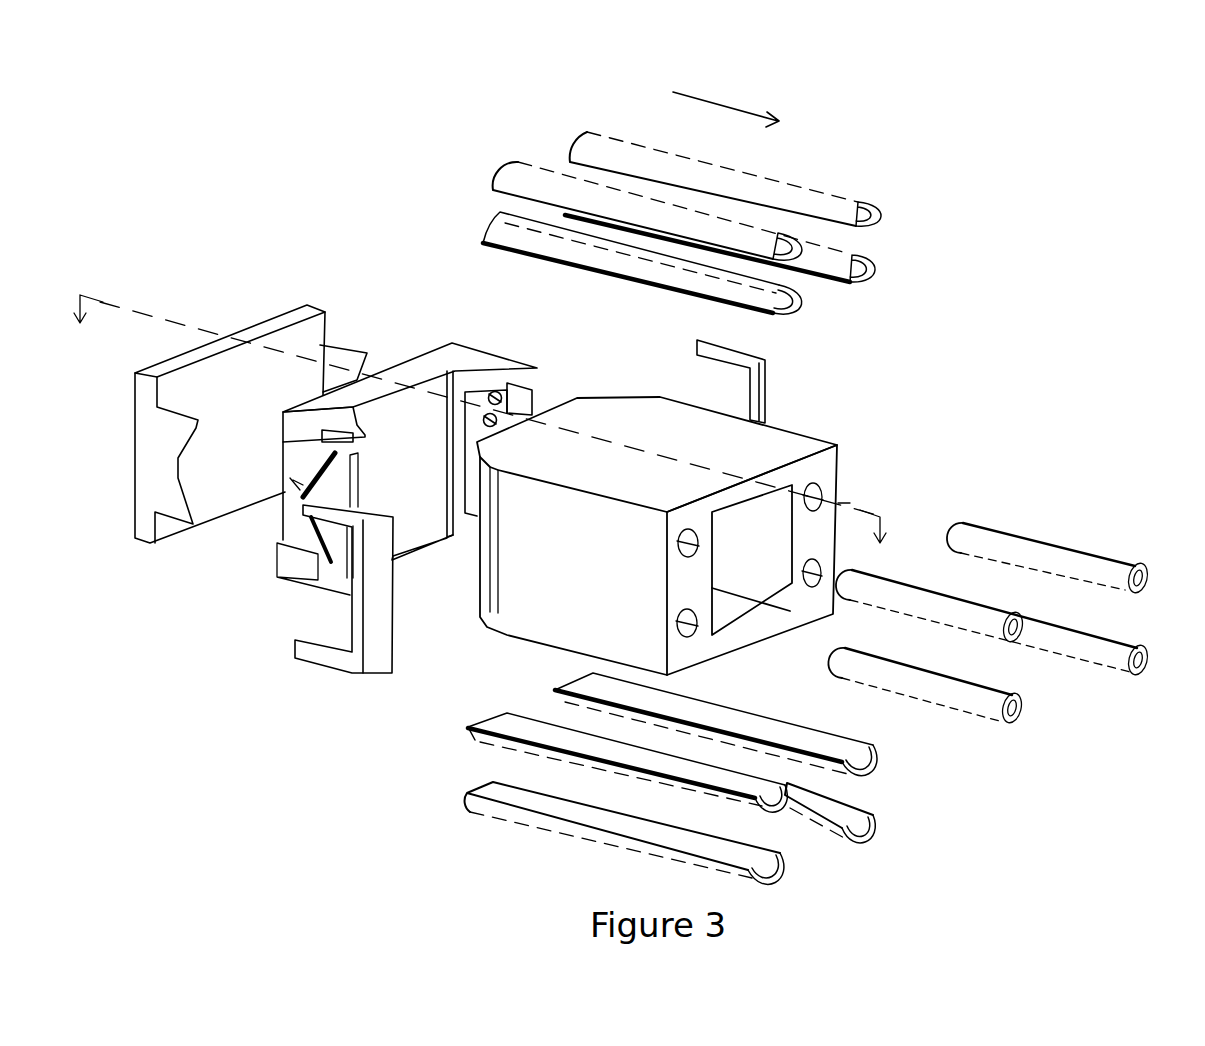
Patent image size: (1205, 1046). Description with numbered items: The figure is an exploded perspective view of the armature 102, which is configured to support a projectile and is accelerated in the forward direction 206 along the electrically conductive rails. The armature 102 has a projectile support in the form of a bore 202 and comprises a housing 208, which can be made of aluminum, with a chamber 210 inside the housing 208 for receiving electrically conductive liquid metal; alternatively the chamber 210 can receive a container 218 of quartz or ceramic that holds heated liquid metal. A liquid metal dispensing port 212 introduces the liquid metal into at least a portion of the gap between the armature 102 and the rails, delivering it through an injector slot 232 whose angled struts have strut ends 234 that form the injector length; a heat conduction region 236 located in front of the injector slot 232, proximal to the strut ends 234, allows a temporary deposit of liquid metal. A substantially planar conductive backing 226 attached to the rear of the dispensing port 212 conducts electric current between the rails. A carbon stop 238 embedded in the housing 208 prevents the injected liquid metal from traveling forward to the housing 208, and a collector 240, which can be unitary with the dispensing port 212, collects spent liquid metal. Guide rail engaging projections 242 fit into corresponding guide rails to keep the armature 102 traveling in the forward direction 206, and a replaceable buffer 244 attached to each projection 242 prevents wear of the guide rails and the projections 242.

The armature 102 is at (1170, 84).
The bore 202 is at (747, 623).
The forward direction 206 is at (705, 98).
The housing 208 is at (687, 535).
The chamber 210 is at (680, 543).
The liquid metal dispensing port 212 is at (447, 342).
The container 218 is at (1053, 535).
The conductive backing 226 is at (290, 310).
The injector slot 232 is at (283, 540).
The strut ends 234 is at (300, 482).
The heat conduction region 236 is at (310, 567).
The stop 238 is at (340, 672).
The collector 240 is at (337, 473).
The guide rail engaging projections 242 is at (800, 307).
The replaceable buffer 244 is at (503, 162).